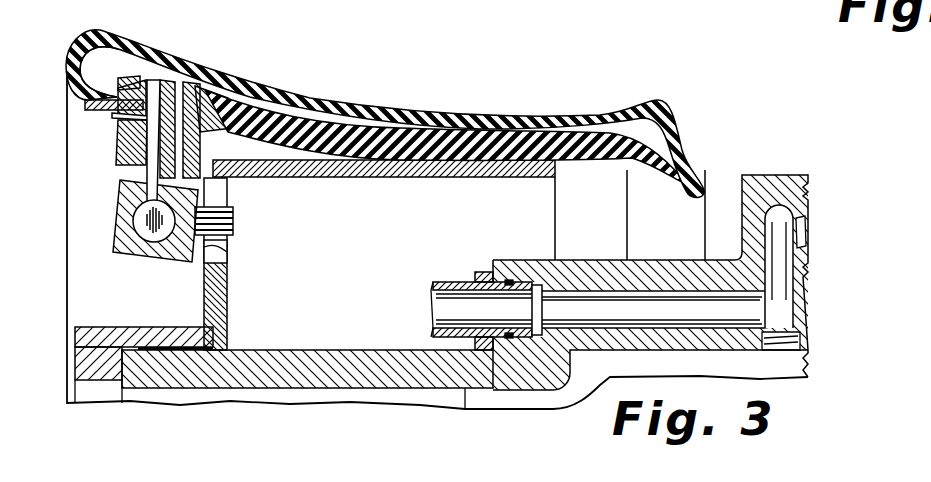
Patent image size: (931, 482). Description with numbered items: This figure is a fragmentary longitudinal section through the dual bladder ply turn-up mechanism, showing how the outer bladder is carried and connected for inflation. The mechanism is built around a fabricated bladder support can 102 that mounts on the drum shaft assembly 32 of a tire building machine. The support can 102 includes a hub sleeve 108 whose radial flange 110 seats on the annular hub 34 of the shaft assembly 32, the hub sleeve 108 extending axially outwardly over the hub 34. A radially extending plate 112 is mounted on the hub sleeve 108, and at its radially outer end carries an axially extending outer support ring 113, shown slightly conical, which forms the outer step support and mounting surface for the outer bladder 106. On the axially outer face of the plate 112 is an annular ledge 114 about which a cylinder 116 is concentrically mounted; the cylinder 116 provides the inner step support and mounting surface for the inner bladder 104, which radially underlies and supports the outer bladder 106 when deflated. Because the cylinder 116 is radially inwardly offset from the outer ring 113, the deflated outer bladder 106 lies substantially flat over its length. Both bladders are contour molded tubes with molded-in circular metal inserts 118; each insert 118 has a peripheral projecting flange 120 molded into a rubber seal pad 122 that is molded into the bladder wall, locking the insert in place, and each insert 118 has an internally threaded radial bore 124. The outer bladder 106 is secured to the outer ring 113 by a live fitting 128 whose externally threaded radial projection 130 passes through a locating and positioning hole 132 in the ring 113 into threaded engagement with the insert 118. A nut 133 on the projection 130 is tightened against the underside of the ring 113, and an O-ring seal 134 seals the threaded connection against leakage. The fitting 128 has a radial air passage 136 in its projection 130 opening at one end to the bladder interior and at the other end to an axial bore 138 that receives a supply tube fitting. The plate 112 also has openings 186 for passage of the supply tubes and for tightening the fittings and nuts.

The drum shaft assembly 32 is at (515, 392).
The annular hub 34 is at (252, 372).
The bladder support can 102 is at (230, 311).
The inner bladder 104 is at (477, 142).
The outer bladder 106 is at (387, 109).
The hub sleeve 108 is at (92, 333).
The radial flange 110 is at (97, 370).
The radially extending plate 112 is at (228, 297).
The outer support ring 113 is at (90, 104).
The annular ledge 114 is at (233, 180).
The cylinder 116 is at (403, 176).
The metal insert 118 is at (193, 113).
The peripheral projecting flange 120 is at (125, 83).
The rubber seal pad 122 is at (117, 97).
The internally threaded radial bore 124 is at (142, 83).
The live fitting 128 is at (153, 250).
The externally threaded radial projection 130 is at (147, 172).
The locating and positioning hole 132 is at (124, 116).
The nut 133 is at (128, 130).
The O-ring seal 134 is at (208, 100).
The radial air passage 136 is at (150, 205).
The axial bore 138 is at (148, 232).
The openings 186 is at (226, 262).